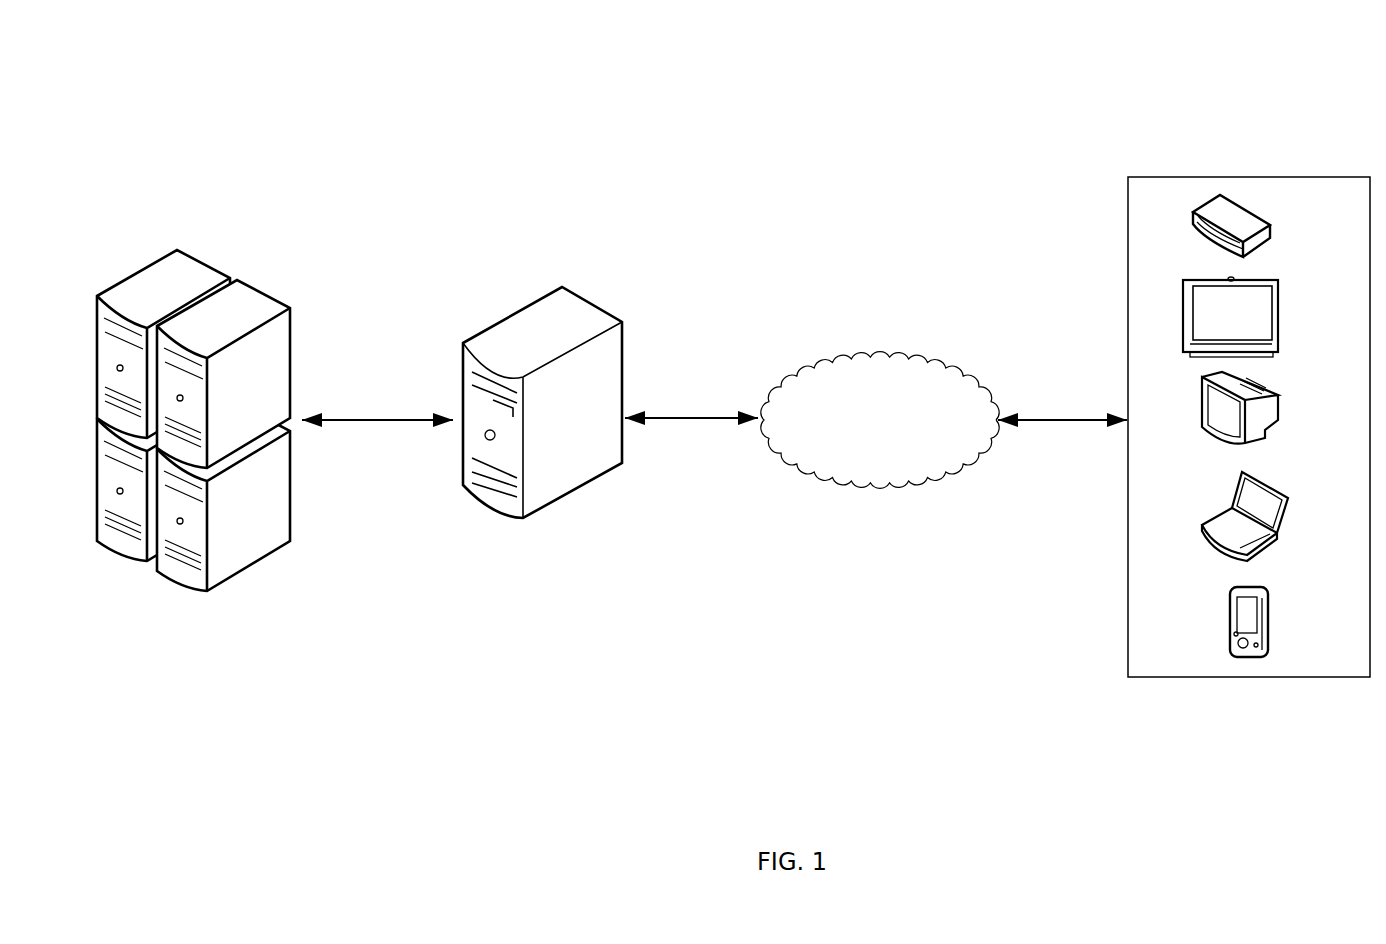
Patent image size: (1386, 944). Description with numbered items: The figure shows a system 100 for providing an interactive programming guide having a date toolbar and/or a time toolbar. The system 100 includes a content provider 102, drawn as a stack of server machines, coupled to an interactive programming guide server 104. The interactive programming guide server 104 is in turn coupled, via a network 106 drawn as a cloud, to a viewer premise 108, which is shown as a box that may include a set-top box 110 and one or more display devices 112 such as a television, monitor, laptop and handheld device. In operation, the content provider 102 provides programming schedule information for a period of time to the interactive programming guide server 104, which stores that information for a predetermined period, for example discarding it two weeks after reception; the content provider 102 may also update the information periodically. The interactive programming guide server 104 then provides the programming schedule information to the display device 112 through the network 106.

The system 100 is at (738, 76).
The content provider 102 is at (253, 272).
The interactive programming guide server 104 is at (587, 287).
The network 106 is at (880, 420).
The viewer premise 108 is at (1165, 177).
The set-top box 110 is at (1250, 223).
The display device 112 is at (1280, 305).